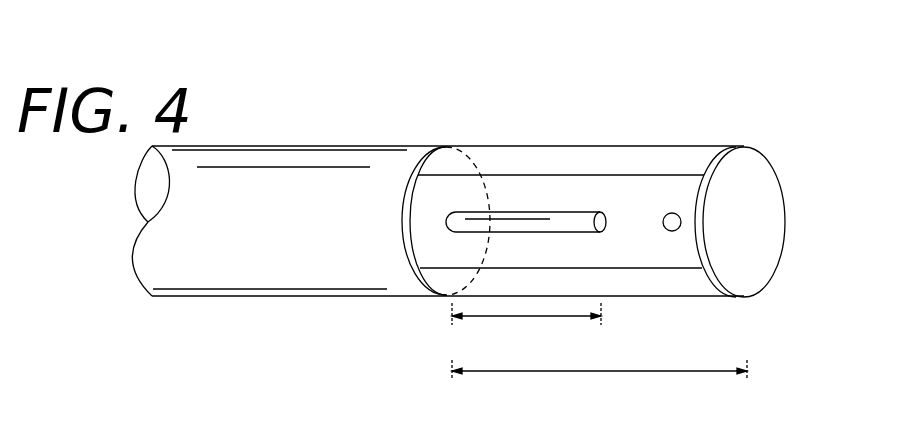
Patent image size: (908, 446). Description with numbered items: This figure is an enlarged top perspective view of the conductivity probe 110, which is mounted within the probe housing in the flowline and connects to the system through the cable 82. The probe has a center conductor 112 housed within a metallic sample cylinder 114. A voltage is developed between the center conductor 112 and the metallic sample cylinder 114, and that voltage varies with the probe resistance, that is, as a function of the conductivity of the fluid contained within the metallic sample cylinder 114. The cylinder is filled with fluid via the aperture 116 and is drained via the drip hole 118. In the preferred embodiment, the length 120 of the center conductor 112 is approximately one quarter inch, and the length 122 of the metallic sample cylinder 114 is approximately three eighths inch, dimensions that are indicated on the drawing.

The cable 82 is at (300, 145).
The conductivity probe 110 is at (478, 110).
The center conductor 112 is at (557, 222).
The metallic sample cylinder 114 is at (617, 146).
The aperture 116 is at (627, 253).
The drip hole 118 is at (670, 222).
The length of center conductor 120 is at (523, 316).
The length of metallic sample cylinder 122 is at (630, 371).